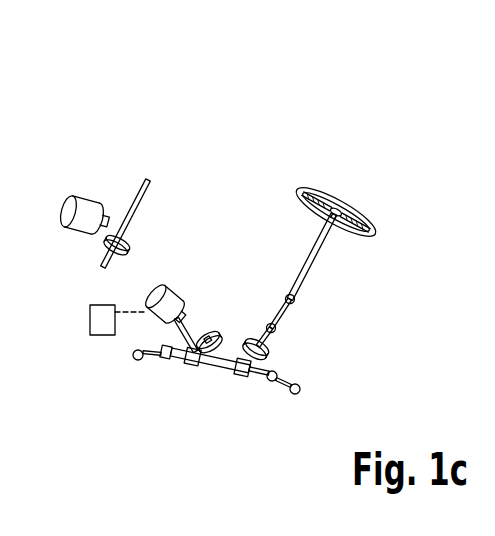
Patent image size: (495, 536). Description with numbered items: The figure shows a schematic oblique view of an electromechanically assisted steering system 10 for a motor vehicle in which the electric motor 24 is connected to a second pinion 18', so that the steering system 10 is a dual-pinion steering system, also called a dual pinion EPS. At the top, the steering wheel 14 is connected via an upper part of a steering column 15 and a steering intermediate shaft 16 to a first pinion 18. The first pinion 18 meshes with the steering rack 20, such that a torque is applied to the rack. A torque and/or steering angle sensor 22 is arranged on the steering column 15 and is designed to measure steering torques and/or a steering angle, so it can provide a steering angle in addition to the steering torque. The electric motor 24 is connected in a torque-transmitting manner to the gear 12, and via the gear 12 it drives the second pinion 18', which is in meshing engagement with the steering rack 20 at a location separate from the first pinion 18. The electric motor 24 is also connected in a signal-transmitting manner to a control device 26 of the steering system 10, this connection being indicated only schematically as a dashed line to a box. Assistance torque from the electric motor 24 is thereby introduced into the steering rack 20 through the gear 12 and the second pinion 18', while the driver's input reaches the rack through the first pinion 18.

The steering system 10 is at (263, 174).
The gear 12 is at (197, 313).
The steering wheel 14 is at (358, 210).
The steering column 15 is at (317, 262).
The steering intermediate shaft 16 is at (289, 311).
The first pinion 18 is at (273, 403).
The second pinion 18' is at (106, 314).
The steering rack 20 is at (217, 367).
The torque and/or steering angle sensor 22 is at (268, 352).
The electric motor 24 is at (78, 208).
The control device 26 is at (90, 320).